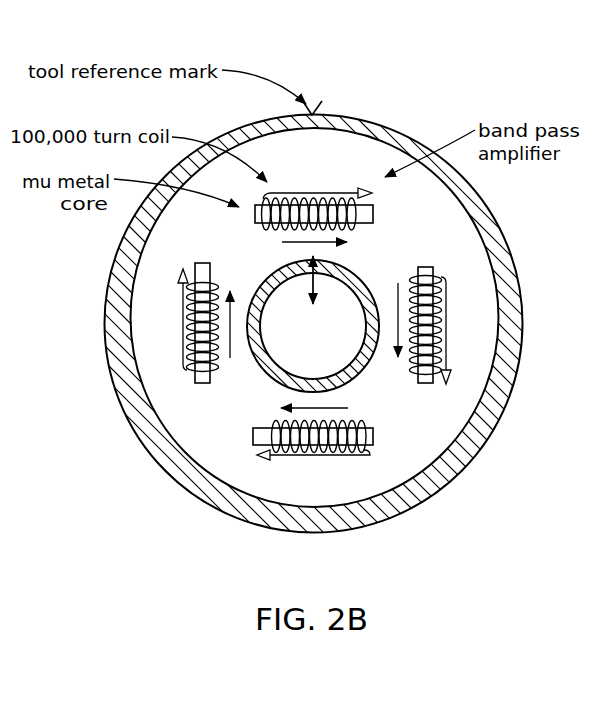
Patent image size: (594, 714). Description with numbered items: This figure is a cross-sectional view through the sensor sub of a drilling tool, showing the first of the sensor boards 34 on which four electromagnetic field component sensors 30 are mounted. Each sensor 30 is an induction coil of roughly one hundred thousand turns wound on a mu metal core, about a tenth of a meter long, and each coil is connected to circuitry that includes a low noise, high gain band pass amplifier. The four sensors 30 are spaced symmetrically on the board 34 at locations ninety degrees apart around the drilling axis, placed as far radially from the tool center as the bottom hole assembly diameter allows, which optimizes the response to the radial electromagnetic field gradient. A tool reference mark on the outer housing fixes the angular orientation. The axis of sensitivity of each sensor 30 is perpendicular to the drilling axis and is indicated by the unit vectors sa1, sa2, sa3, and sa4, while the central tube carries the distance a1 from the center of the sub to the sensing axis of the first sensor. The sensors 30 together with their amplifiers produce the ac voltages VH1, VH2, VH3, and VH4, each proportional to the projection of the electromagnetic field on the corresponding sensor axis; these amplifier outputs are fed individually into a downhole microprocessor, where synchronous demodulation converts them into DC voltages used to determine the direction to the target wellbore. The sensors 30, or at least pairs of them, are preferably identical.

The electromagnetic field component sensor 30 is at (308, 321).
The board 34 is at (507, 237).
The ac voltage VH1 is at (372, 193).
The ac voltage VH2 is at (446, 384).
The ac voltage VH3 is at (257, 455).
The ac voltage VH4 is at (183, 269).
The distance a1 is at (317, 299).
The axis of sensitivity unit vector sa1 is at (336, 243).
The axis of sensitivity unit vector sa2 is at (401, 334).
The axis of sensitivity unit vector sa3 is at (295, 408).
The axis of sensitivity unit vector sa4 is at (233, 311).